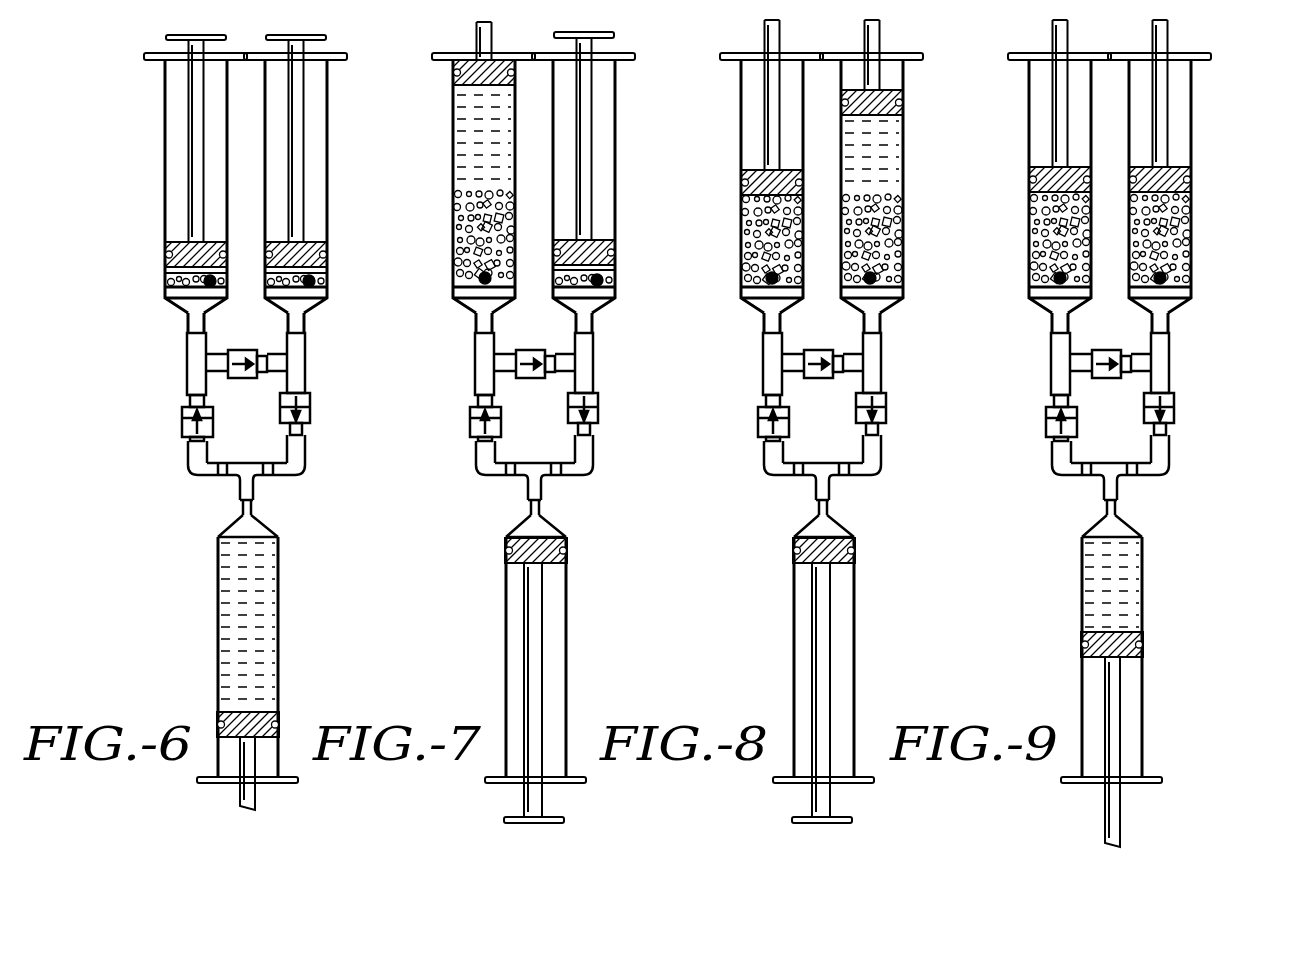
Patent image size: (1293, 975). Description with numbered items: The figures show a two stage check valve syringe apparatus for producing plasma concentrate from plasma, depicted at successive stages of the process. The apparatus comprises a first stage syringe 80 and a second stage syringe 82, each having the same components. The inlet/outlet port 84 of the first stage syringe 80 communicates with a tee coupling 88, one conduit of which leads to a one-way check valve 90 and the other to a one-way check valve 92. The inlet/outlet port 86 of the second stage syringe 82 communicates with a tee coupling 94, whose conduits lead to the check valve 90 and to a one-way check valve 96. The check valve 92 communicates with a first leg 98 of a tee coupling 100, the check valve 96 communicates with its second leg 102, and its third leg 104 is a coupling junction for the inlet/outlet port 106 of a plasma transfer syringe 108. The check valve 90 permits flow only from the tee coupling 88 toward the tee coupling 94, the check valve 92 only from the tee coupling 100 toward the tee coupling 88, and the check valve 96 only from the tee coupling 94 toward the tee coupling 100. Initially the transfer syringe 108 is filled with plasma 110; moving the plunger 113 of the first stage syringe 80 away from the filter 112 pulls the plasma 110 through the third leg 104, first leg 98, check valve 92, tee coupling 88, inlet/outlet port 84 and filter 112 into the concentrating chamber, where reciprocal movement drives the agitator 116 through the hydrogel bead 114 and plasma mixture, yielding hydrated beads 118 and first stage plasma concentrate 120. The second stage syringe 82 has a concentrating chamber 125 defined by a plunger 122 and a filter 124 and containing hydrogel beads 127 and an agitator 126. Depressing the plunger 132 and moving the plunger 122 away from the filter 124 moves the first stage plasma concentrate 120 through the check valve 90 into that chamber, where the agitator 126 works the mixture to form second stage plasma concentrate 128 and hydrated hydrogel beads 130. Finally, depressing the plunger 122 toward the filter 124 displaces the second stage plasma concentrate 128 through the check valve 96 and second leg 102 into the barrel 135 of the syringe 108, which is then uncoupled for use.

In FIG. 6, the first stage syringe 80 is at (177, 176).
In FIG. 7, the first stage syringe 80 is at (477, 167).
In FIG. 8, the first stage syringe 80 is at (774, 166).
In FIG. 9, the first stage syringe 80 is at (1064, 166).
In FIG. 6, the second stage syringe 82 is at (315, 174).
In FIG. 7, the second stage syringe 82 is at (603, 178).
In FIG. 8, the second stage syringe 82 is at (888, 166).
In FIG. 9, the second stage syringe 82 is at (1179, 166).
In FIG. 6, the inlet/outlet port 84 is at (188, 318).
In FIG. 7, the inlet/outlet port 84 is at (458, 322).
In FIG. 8, the inlet/outlet port 84 is at (793, 321).
In FIG. 6, the inlet/outlet port 86 is at (306, 318).
In FIG. 7, the inlet/outlet port 86 is at (603, 328).
In FIG. 8, the inlet/outlet port 86 is at (891, 327).
In FIG. 9, the inlet/outlet port 86 is at (1181, 323).
In FIG. 6, the tee coupling 88 is at (197, 360).
In FIG. 7, the tee coupling 88 is at (502, 351).
In FIG. 8, the tee coupling 88 is at (760, 364).
In FIG. 6, the one-way check valve 90 is at (231, 352).
In FIG. 7, the one-way check valve 90 is at (545, 349).
In FIG. 8, the one-way check valve 90 is at (833, 349).
In FIG. 6, the one-way check valve 92 is at (182, 416).
In FIG. 6, the tee coupling 94 is at (306, 357).
In FIG. 7, the tee coupling 94 is at (601, 363).
In FIG. 8, the tee coupling 94 is at (890, 363).
In FIG. 9, the tee coupling 94 is at (1180, 363).
In FIG. 6, the one-way check valve 96 is at (311, 414).
In FIG. 8, the one-way check valve 96 is at (893, 414).
In FIG. 9, the one-way check valve 96 is at (1181, 414).
In FIG. 6, the first leg 98 is at (192, 471).
In FIG. 6, the tee coupling 100 is at (250, 468).
In FIG. 8, the tee coupling 100 is at (823, 458).
In FIG. 9, the tee coupling 100 is at (1111, 458).
In FIG. 6, the second leg 102 is at (307, 465).
In FIG. 8, the second leg 102 is at (894, 457).
In FIG. 9, the second leg 102 is at (1183, 457).
In FIG. 6, the third leg 104 is at (255, 491).
In FIG. 8, the third leg 104 is at (850, 498).
In FIG. 9, the third leg 104 is at (1138, 498).
In FIG. 6, the inlet/outlet port 106 is at (264, 530).
In FIG. 8, the inlet/outlet port 106 is at (844, 521).
In FIG. 9, the inlet/outlet port 106 is at (1132, 521).
In FIG. 6, the plasma transfer syringe 108 is at (254, 673).
In FIG. 7, the plasma transfer syringe 108 is at (555, 679).
In FIG. 8, the plasma transfer syringe 108 is at (865, 679).
In FIG. 9, the plasma transfer syringe 108 is at (1135, 692).
In FIG. 6, the plasma 110 is at (245, 632).
In FIG. 6, the filter 112 is at (211, 291).
In FIG. 7, the filter 112 is at (458, 292).
In FIG. 6, the plunger 113 is at (212, 250).
In FIG. 7, the plunger 113 is at (471, 85).
In FIG. 8, the plunger 113 is at (774, 169).
In FIG. 6, the hydrogel beads 114 is at (166, 284).
In FIG. 9, the hydrogel beads 114 is at (1079, 239).
In FIG. 6, the agitator 116 is at (226, 281).
In FIG. 7, the agitator 116 is at (516, 261).
In FIG. 7, the hydrated beads 118 is at (503, 233).
In FIG. 7, the first stage plasma concentrate 120 is at (504, 137).
In FIG. 7, the plunger 122 is at (594, 247).
In FIG. 8, the plunger 122 is at (879, 101).
In FIG. 9, the plunger 122 is at (1170, 179).
In FIG. 7, the filter 124 is at (610, 292).
In FIG. 8, the filter 124 is at (896, 291).
In FIG. 9, the filter 124 is at (1184, 291).
In FIG. 7, the concentrating chamber 125 is at (612, 272).
In FIG. 6, the agitator 126 is at (322, 282).
In FIG. 8, the agitator 126 is at (907, 271).
In FIG. 7, the hydrogel beads 127 is at (623, 299).
In FIG. 8, the second stage plasma concentrate 128 is at (898, 153).
In FIG. 9, the second stage plasma concentrate 128 is at (1142, 585).
In FIG. 8, the hydrated hydrogel beads 130 is at (897, 239).
In FIG. 8, the plunger 132 is at (840, 551).
In FIG. 9, the plunger 132 is at (1129, 645).
In FIG. 6, the barrel 135 is at (247, 660).
In FIG. 7, the barrel 135 is at (553, 660).
In FIG. 8, the barrel 135 is at (848, 660).
In FIG. 9, the barrel 135 is at (1138, 660).